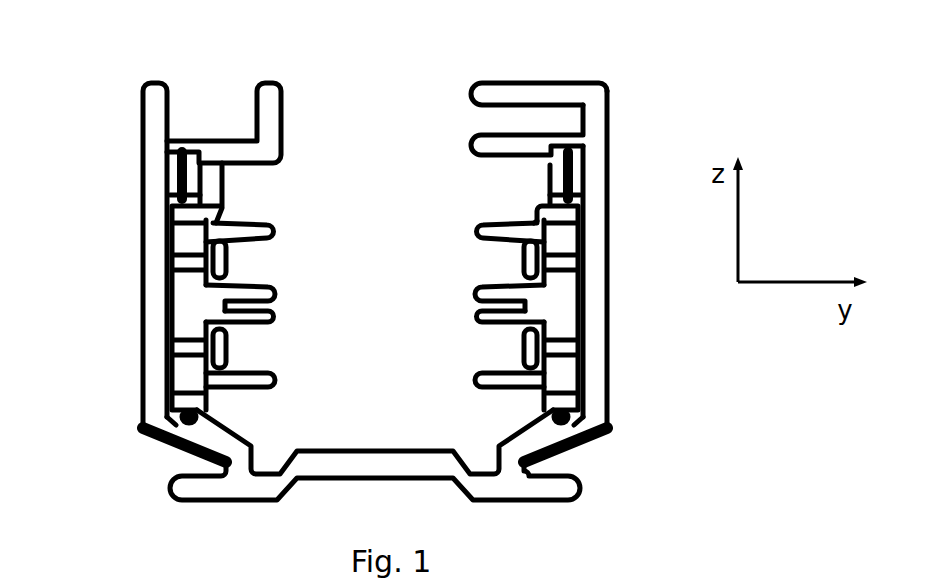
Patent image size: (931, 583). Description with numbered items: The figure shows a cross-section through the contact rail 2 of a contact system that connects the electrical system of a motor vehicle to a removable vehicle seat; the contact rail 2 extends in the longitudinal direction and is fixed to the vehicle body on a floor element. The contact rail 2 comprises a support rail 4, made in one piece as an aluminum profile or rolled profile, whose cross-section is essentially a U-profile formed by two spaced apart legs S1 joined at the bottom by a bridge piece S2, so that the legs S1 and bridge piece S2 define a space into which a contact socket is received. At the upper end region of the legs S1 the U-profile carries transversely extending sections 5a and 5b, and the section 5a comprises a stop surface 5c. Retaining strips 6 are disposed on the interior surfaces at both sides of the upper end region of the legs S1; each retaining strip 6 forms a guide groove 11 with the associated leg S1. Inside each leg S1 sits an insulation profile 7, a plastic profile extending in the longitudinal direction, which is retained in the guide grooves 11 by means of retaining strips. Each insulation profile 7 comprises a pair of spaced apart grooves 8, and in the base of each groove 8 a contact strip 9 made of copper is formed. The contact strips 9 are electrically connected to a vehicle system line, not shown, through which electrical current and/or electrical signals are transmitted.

The contact rail 2 is at (152, 184).
The support rail 4 is at (152, 333).
The transversely extending section 5a is at (588, 86).
The transversely extending section 5b is at (233, 139).
The stop surface 5c is at (512, 81).
The retaining strip 6 is at (190, 190).
The insulation profile 7 is at (218, 224).
The groove 8 is at (268, 231).
The contact strip 9 is at (220, 263).
The guide groove 11 is at (176, 178).
The leg S1 is at (150, 372).
The bridge piece S2 is at (390, 480).